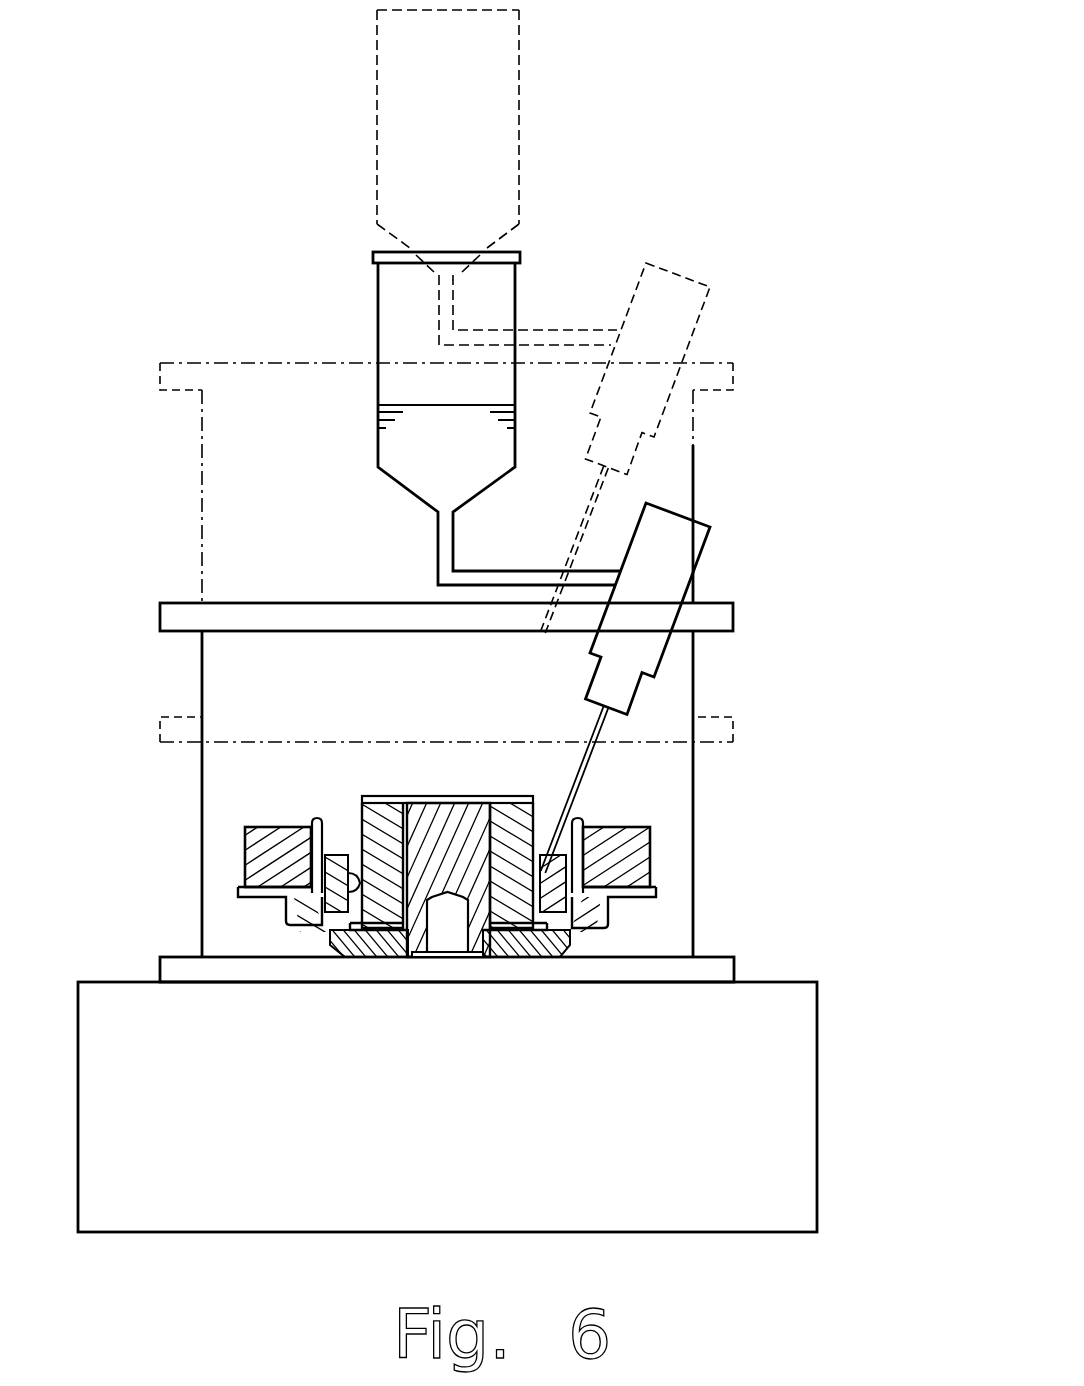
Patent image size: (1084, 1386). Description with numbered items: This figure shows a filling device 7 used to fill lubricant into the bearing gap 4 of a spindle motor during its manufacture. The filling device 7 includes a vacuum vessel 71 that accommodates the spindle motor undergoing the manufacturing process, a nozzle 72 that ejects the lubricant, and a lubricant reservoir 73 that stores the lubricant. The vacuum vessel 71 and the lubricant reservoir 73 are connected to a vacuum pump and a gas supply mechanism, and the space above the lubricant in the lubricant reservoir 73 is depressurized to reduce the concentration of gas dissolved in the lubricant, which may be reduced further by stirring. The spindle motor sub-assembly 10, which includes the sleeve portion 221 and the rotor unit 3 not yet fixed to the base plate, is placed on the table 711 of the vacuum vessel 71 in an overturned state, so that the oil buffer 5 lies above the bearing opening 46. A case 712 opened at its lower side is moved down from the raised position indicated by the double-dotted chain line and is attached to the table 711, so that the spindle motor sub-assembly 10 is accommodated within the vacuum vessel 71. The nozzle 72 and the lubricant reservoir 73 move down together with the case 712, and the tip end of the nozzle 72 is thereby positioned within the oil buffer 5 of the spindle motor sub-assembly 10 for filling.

The filling device 7 is at (100, 546).
The vacuum vessel 71 is at (866, 957).
The table 711 is at (817, 997).
The case 712 is at (693, 443).
The lubricant reservoir 73 is at (377, 70).
The nozzle 72 is at (603, 508).
The spindle motor sub-assembly 10 is at (786, 838).
The sleeve portion 221 is at (533, 845).
The rotor unit 3 is at (588, 905).
The bearing gap 4 is at (327, 897).
The oil buffer 5 is at (347, 875).
The bearing opening 46 is at (360, 883).